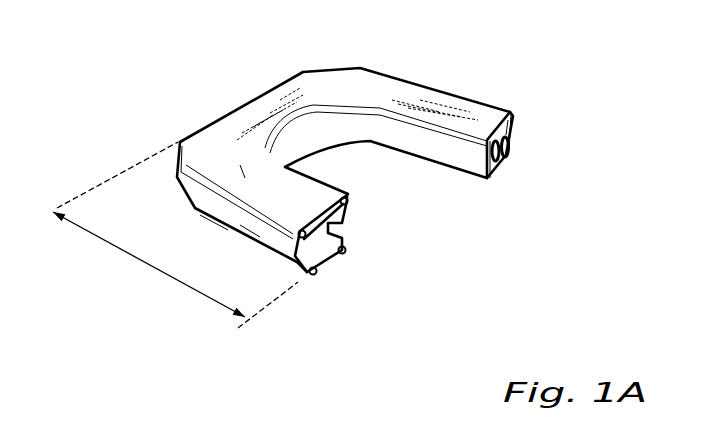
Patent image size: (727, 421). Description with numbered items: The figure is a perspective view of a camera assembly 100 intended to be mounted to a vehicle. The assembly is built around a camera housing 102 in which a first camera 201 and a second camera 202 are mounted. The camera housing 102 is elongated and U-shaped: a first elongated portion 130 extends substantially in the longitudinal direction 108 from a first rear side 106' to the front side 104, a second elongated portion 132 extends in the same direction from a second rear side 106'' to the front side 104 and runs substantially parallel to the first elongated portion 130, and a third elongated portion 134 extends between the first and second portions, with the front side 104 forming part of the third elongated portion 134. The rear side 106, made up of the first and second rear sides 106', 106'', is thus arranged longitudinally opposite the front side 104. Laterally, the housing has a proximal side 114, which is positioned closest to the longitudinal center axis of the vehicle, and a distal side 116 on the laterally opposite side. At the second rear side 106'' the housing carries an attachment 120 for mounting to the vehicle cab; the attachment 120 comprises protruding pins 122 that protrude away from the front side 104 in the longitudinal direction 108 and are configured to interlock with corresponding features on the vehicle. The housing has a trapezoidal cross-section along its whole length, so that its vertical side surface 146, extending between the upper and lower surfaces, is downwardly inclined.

The camera assembly 100 is at (198, 102).
The camera housing 102 is at (322, 80).
The front side 104 is at (177, 160).
The rear side 106 is at (436, 217).
The first rear side 106' is at (551, 160).
The second rear side 106'' is at (392, 232).
The longitudinal direction 108 is at (143, 262).
The proximal side 114 is at (253, 232).
The distal side 116 is at (373, 70).
The attachment 120 is at (296, 289).
The protruding pin 122 is at (317, 273).
The first elongated portion 130 is at (457, 105).
The second elongated portion 132 is at (245, 180).
The third elongated portion 134 is at (287, 95).
The vertical side surface 146 is at (228, 222).
The first camera 201 is at (515, 127).
The second camera 202 is at (512, 110).